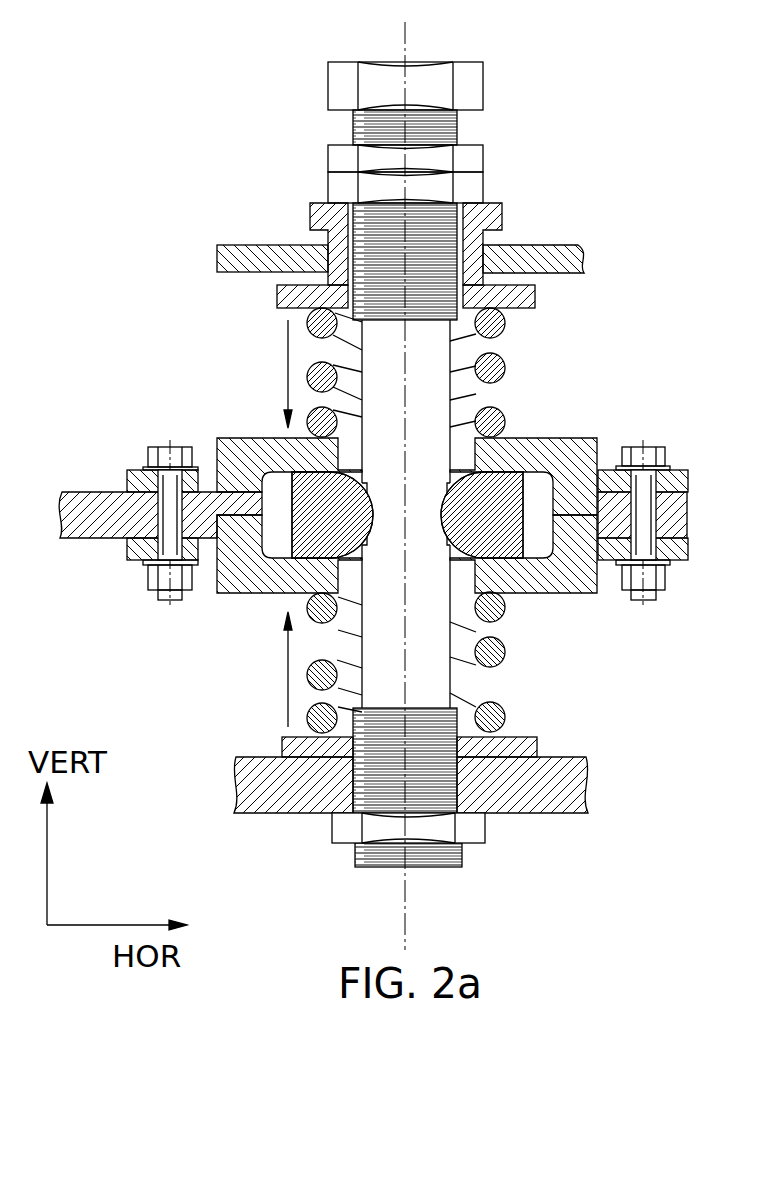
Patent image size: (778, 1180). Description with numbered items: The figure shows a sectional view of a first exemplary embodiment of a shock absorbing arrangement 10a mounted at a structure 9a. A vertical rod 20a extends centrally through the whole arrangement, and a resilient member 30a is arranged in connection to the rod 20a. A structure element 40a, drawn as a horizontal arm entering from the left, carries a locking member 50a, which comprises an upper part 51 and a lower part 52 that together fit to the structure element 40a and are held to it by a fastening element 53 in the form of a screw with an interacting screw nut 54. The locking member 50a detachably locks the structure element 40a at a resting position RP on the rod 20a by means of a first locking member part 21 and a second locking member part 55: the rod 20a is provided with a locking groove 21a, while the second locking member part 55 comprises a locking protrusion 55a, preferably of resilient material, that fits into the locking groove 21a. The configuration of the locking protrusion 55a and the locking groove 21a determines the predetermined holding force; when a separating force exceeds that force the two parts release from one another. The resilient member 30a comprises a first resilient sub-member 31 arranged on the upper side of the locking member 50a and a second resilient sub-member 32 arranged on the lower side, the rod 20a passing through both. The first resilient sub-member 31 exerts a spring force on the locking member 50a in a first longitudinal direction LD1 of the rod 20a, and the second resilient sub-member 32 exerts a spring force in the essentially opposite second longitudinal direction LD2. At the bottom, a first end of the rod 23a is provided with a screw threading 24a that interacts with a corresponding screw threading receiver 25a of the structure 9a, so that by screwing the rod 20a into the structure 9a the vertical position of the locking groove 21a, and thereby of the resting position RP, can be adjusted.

The shock absorbing arrangement 10a is at (361, 486).
The rod 20a is at (430, 345).
The first locking member part 21 is at (531, 581).
The locking groove 21a is at (422, 547).
The first end of the rod 23a is at (497, 858).
The screw threading 24a is at (460, 853).
The screw threading receiver 25a is at (382, 783).
The resilient member 30a is at (513, 658).
The first resilient sub-member 31 is at (488, 372).
The second resilient sub-member 32 is at (508, 714).
The structure element 40a is at (95, 507).
The locking member 50a is at (379, 523).
The upper part 51 is at (240, 455).
The lower part 52 is at (248, 572).
The fastening element 53 is at (140, 432).
The screw nut 54 is at (167, 520).
The second locking member part 55 is at (475, 469).
The locking protrusion 55a is at (525, 482).
The structure 9a is at (592, 786).
The first longitudinal direction LD1 is at (288, 355).
The second longitudinal direction LD2 is at (288, 680).
The resting position RP is at (483, 561).